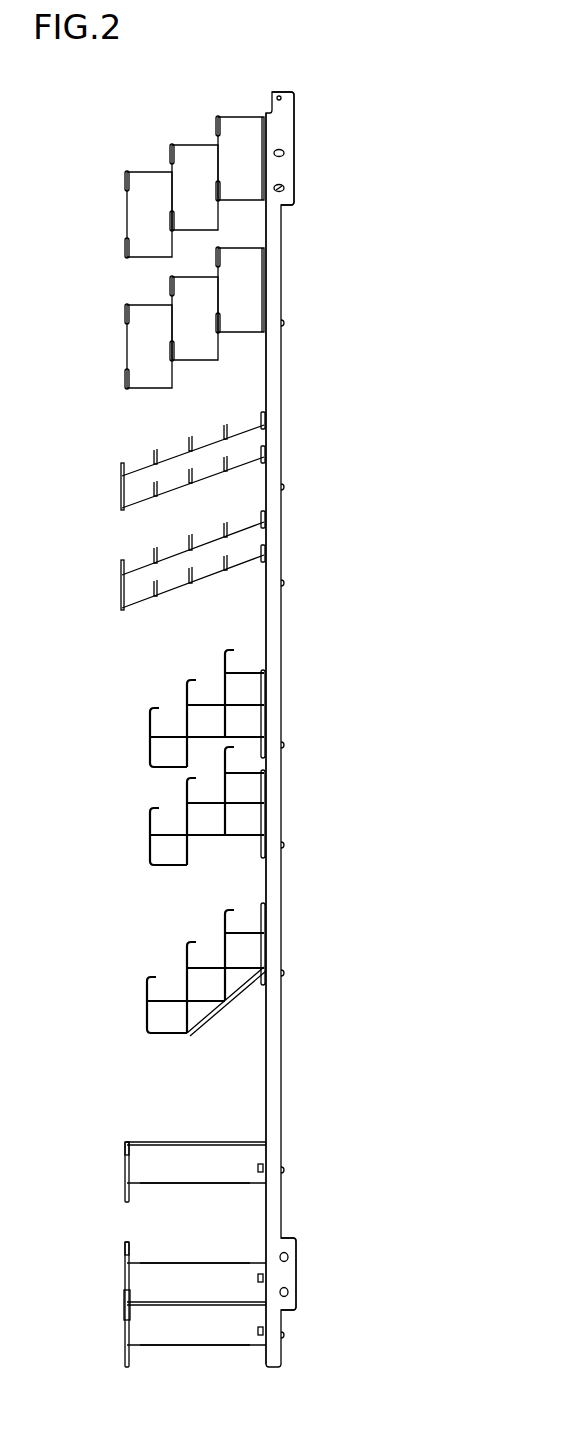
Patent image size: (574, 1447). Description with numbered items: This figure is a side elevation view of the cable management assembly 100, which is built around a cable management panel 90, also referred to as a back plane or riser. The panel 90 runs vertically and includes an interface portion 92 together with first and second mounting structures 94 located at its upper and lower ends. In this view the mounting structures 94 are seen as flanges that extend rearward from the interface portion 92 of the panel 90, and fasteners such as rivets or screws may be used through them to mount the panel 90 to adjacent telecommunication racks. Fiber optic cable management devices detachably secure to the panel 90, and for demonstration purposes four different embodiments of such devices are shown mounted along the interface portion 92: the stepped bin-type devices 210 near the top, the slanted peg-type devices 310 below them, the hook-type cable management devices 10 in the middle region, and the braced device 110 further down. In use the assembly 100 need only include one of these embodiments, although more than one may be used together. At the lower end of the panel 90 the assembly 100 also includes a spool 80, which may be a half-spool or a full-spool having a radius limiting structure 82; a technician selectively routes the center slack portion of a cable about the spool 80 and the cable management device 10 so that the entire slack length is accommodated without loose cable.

The cable management assembly 100 is at (335, 67).
The cable management panel 90 is at (264, 621).
The interface portion 92 is at (267, 382).
The mounting structures 94 is at (286, 100).
The fiber optic cable management device 210 is at (103, 226).
The fiber optic cable management device 310 is at (103, 489).
The cable management device 10 is at (125, 740).
The fiber optic cable management device 110 is at (125, 970).
The spool 80 is at (105, 1268).
The radius limiting structure 82 is at (185, 1330).